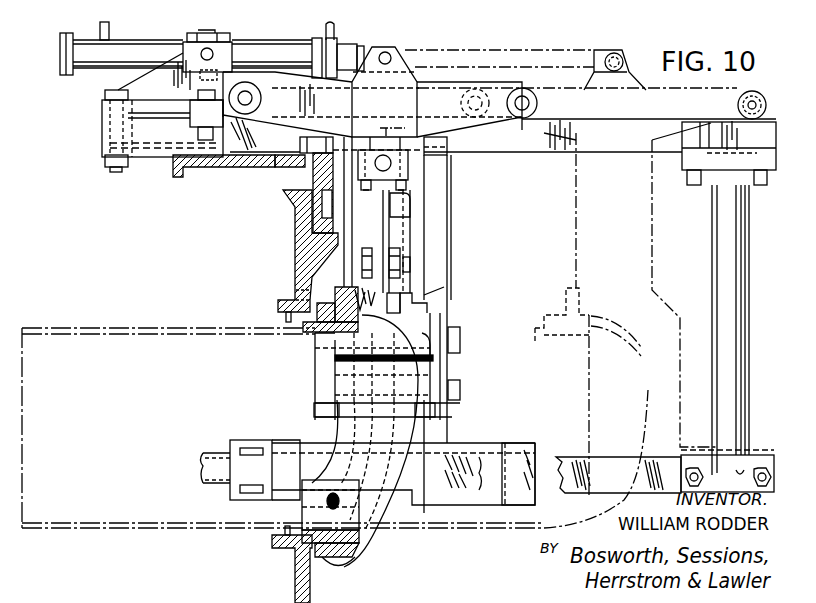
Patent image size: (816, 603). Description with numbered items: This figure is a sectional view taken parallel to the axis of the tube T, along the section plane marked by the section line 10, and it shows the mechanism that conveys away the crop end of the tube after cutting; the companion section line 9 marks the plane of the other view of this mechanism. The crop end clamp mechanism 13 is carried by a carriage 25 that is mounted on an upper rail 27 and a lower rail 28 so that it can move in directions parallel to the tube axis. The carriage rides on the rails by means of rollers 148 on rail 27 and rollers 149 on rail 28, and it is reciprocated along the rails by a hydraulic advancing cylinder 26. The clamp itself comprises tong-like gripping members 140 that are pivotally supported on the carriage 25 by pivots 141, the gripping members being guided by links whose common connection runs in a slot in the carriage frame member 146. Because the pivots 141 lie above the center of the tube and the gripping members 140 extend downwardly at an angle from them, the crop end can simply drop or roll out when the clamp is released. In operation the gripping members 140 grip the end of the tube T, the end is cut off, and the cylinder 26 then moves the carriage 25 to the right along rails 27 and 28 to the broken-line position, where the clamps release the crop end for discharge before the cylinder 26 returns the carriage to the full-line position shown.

The section line 9- 9 is at (398, 21).
The section line 10- 10 is at (383, 0).
The crop end clamp mechanism 13 is at (457, 288).
The carriage 25 is at (385, 214).
The hydraulic advancing cylinder 26 is at (153, 44).
The rail 27 is at (624, 128).
The rail 28 is at (630, 455).
The tong-like gripping members 140 is at (333, 299).
The pivots 141 is at (410, 255).
The carriage frame member 146 is at (418, 182).
The rollers 148 is at (262, 99).
The rollers 149 is at (233, 463).
The tube T is at (166, 330).